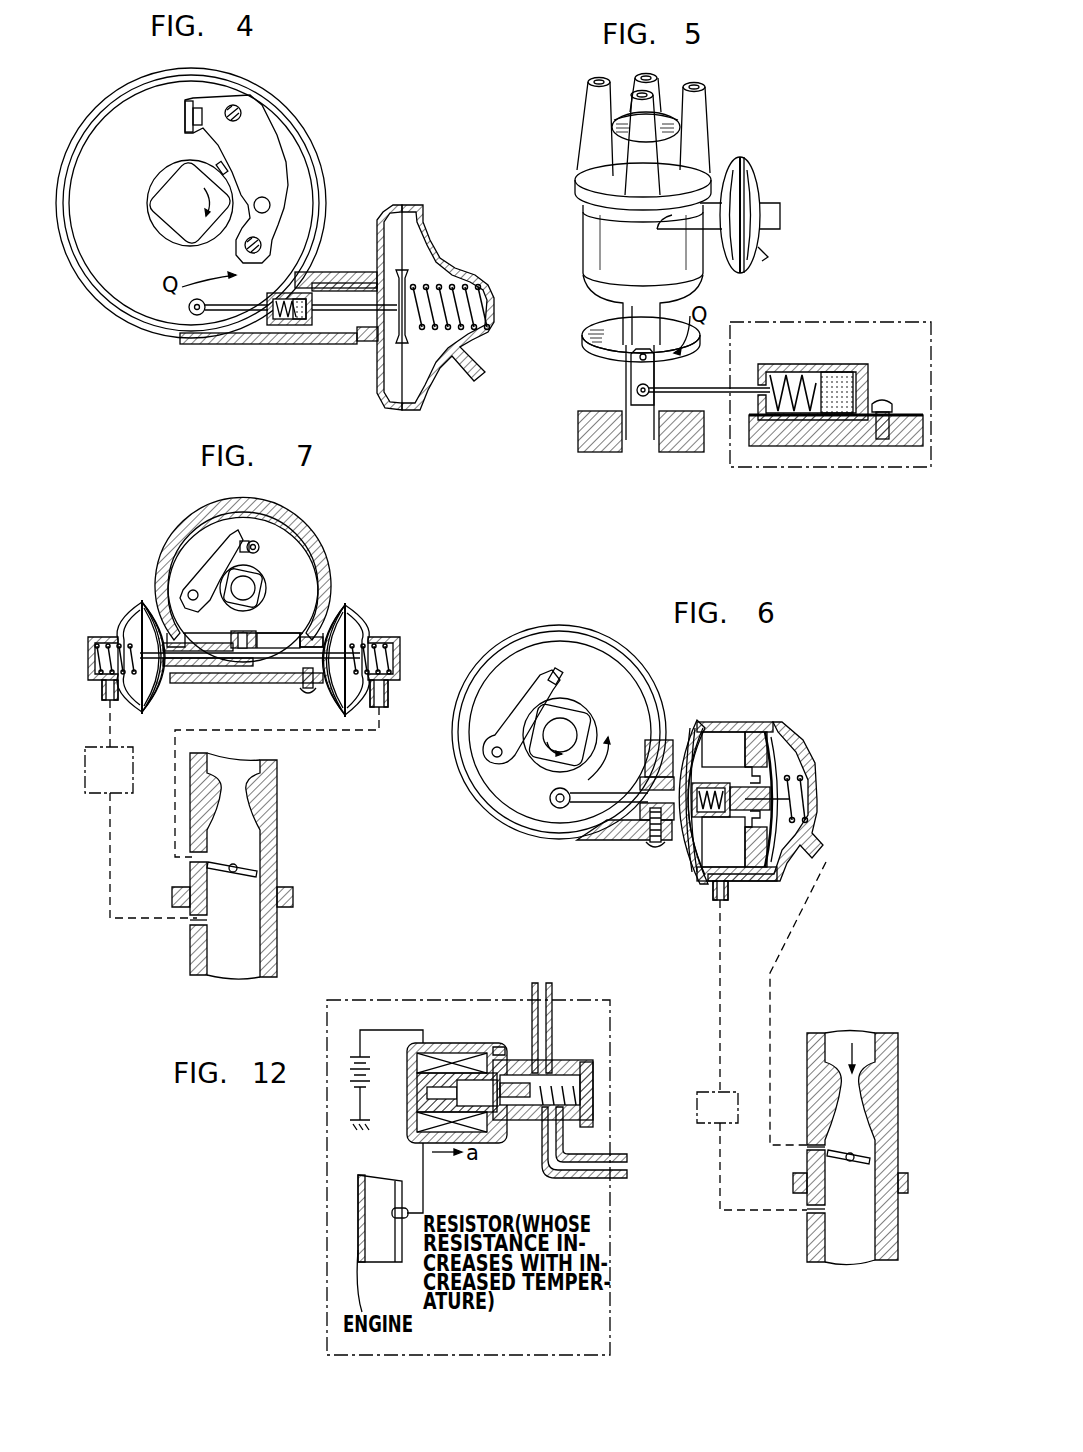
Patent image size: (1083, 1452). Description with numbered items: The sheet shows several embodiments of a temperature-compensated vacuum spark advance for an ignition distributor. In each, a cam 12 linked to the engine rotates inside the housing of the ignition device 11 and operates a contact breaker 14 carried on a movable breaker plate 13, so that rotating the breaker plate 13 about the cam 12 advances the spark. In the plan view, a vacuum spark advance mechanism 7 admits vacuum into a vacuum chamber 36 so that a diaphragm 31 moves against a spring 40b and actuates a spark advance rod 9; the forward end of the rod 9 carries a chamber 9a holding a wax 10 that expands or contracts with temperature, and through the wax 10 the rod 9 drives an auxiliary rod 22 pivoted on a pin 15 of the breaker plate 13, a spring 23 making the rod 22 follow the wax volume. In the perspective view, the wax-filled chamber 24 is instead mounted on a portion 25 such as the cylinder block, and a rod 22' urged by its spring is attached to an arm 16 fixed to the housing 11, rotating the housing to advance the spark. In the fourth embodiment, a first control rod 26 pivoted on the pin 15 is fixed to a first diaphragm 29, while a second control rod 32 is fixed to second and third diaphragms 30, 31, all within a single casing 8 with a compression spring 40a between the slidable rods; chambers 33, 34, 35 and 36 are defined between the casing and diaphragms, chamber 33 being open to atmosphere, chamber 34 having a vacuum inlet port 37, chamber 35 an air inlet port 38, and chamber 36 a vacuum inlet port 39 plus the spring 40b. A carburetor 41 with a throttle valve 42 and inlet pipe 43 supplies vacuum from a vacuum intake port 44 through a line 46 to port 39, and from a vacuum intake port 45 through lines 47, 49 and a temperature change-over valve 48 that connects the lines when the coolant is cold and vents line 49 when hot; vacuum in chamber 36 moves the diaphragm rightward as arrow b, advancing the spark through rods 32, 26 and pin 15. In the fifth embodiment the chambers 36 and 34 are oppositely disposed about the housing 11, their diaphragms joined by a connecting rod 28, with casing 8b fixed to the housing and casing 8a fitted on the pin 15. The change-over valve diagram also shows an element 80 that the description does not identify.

In FIG. 4, the vacuum spark advance mechanism 7 is at (436, 290).
In FIG. 6, the vacuum spark advance mechanism 7 is at (753, 789).
In FIG. 6, the casing 8 is at (820, 832).
In FIG. 7, the casing of the second vacuum chamber 8a is at (102, 646).
In FIG. 7, the casing of the first vacuum chamber 8b is at (385, 660).
In FIG. 4, the spark advance rod 9 is at (364, 341).
In FIG. 4, the chamber 9a is at (301, 320).
In FIG. 4, the wax 10 is at (312, 278).
In FIG. 5, the wax 10 is at (857, 385).
In FIG. 4, the housing of the ignition device 11 is at (98, 314).
In FIG. 5, the housing of the ignition device 11 is at (580, 232).
In FIG. 7, the housing of the ignition device 11 is at (327, 547).
In FIG. 6, the housing of the ignition device 11 is at (478, 667).
In FIG. 4, the cam 12 is at (165, 194).
In FIG. 7, the cam 12 is at (256, 590).
In FIG. 6, the cam 12 is at (565, 725).
In FIG. 4, the movable breaker plate 13 is at (97, 136).
In FIG. 7, the movable breaker plate 13 is at (318, 579).
In FIG. 6, the movable breaker plate 13 is at (622, 681).
In FIG. 4, the contact breaker 14 is at (262, 183).
In FIG. 7, the contact breaker 14 is at (222, 566).
In FIG. 6, the contact breaker 14 is at (522, 717).
In FIG. 4, the pin 15 is at (197, 315).
In FIG. 7, the pin 15 is at (250, 633).
In FIG. 6, the pin 15 is at (551, 798).
In FIG. 5, the arm 16 is at (631, 386).
In FIG. 4, the auxiliary rod 22 is at (301, 339).
In FIG. 5, the rod 22' is at (709, 378).
In FIG. 4, the spring 23 is at (281, 322).
In FIG. 5, the spring 23 is at (783, 378).
In FIG. 5, the chamber 24 is at (838, 372).
In FIG. 5, the portion 25 is at (835, 438).
In FIG. 6, the first control rod 26 is at (626, 805).
In FIG. 7, the connecting rod 28 is at (250, 649).
In FIG. 7, the first diaphragm 29 is at (152, 704).
In FIG. 6, the first diaphragm 29 is at (704, 722).
In FIG. 6, the second diaphragm 30 is at (723, 750).
In FIG. 4, the third diaphragm 31 is at (412, 226).
In FIG. 7, the third diaphragm 31 is at (310, 693).
In FIG. 6, the third diaphragm 31 is at (790, 745).
In FIG. 6, the second control rod 32 is at (737, 849).
In FIG. 6, the chamber 33 is at (686, 742).
In FIG. 7, the chamber 34 is at (128, 640).
In FIG. 6, the chamber 34 is at (736, 732).
In FIG. 6, the chamber 35 is at (772, 740).
In FIG. 4, the vacuum chamber 36 is at (420, 248).
In FIG. 7, the vacuum chamber 36 is at (360, 645).
In FIG. 6, the vacuum chamber 36 is at (802, 760).
In FIG. 7, the vacuum inlet port 37 is at (102, 692).
In FIG. 6, the vacuum inlet port 37 is at (728, 893).
In FIG. 6, the air inlet port 38 is at (766, 728).
In FIG. 7, the vacuum inlet port 39 is at (388, 702).
In FIG. 6, the vacuum inlet port 39 is at (826, 860).
In FIG. 7, the compression spring 40a is at (90, 660).
In FIG. 6, the compression spring 40a is at (688, 868).
In FIG. 4, the compression spring 40b is at (470, 290).
In FIG. 7, the compression spring 40b is at (400, 662).
In FIG. 6, the compression spring 40b is at (806, 797).
In FIG. 6, the carburetor 41 is at (878, 1090).
In FIG. 6, the throttle valve 42 is at (868, 1155).
In FIG. 6, the inlet pipe 43 is at (890, 1215).
In FIG. 7, the vacuum intake port 44 is at (195, 858).
In FIG. 6, the vacuum intake port 44 is at (818, 1143).
In FIG. 7, the vacuum intake port 45 is at (195, 926).
In FIG. 6, the vacuum intake port 45 is at (815, 1216).
In FIG. 7, the line 46 is at (325, 731).
In FIG. 6, the line 46 is at (775, 980).
In FIG. 7, the line 47 is at (108, 833).
In FIG. 6, the line 47 is at (718, 1181).
In FIG. 12, the line 47 is at (588, 1186).
In FIG. 7, the temperature change-over valve 48 is at (85, 783).
In FIG. 6, the temperature change-over valve 48 is at (697, 1105).
In FIG. 12, the temperature change-over valve 48 is at (610, 1075).
In FIG. 7, the line 49 is at (110, 737).
In FIG. 6, the line 49 is at (718, 975).
In FIG. 12, the line 49 is at (552, 1042).
In FIG. 12, the temperature-sensitive resistor 80 is at (407, 1209).
In FIG. 6, the arrow b is at (772, 800).